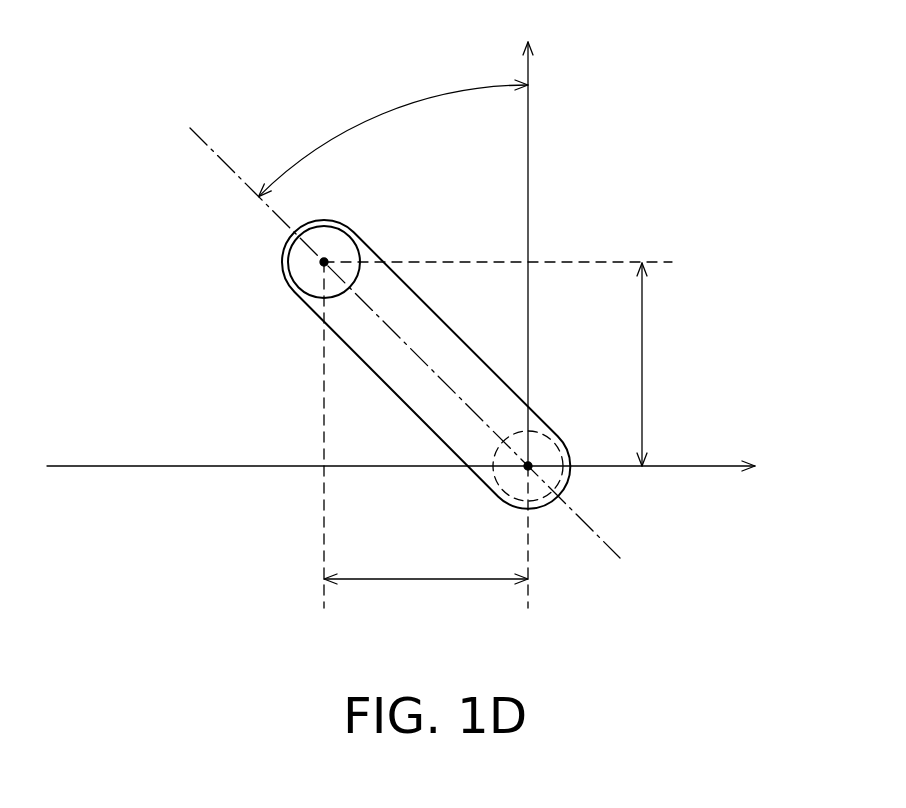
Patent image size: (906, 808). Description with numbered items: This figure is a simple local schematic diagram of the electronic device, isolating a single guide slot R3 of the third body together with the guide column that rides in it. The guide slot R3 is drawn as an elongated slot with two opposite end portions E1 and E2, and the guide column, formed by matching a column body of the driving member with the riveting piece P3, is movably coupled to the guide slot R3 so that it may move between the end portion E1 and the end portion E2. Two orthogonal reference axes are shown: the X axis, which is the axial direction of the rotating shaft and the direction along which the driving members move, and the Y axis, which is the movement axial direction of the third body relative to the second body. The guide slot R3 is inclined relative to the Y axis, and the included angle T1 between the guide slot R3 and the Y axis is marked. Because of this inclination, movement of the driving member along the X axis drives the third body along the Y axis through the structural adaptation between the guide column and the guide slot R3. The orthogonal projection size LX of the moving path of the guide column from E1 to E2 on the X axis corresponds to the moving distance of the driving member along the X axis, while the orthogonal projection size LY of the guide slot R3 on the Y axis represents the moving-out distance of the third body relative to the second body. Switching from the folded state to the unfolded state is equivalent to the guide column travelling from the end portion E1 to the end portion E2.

The end portion E1 is at (285, 248).
The end portion E2 is at (563, 488).
The riveting piece P3 is at (303, 272).
The guide slot R3 is at (450, 363).
The included angle T1 is at (393, 138).
The orthogonal projection size LX is at (426, 439).
The orthogonal projection size LY is at (500, 364).
The X axis X is at (412, 467).
The Y axis Y is at (526, 235).